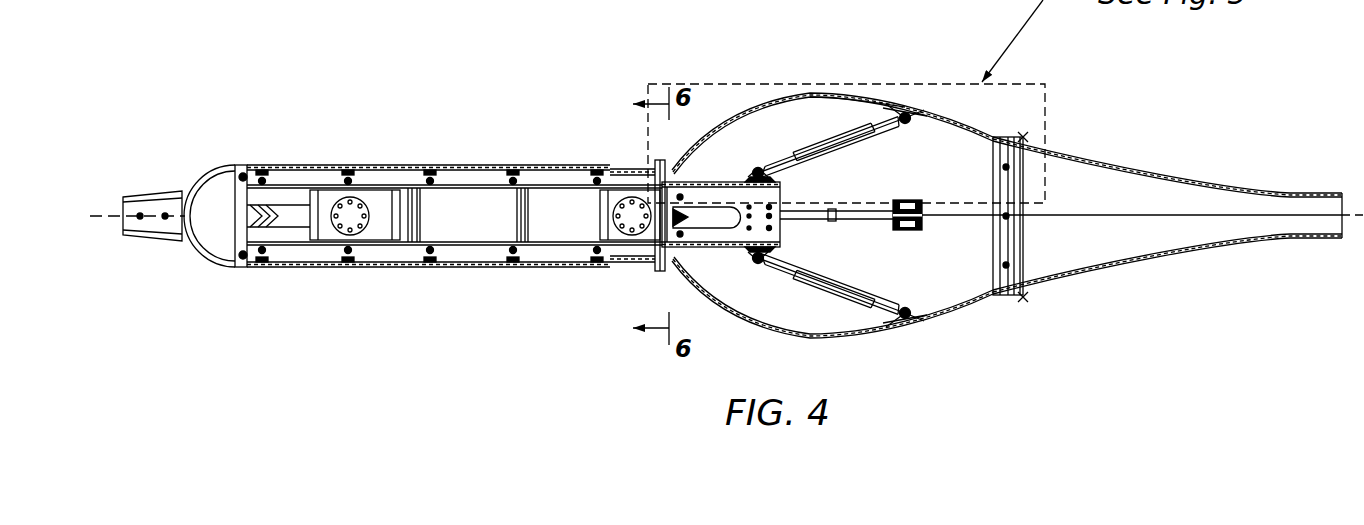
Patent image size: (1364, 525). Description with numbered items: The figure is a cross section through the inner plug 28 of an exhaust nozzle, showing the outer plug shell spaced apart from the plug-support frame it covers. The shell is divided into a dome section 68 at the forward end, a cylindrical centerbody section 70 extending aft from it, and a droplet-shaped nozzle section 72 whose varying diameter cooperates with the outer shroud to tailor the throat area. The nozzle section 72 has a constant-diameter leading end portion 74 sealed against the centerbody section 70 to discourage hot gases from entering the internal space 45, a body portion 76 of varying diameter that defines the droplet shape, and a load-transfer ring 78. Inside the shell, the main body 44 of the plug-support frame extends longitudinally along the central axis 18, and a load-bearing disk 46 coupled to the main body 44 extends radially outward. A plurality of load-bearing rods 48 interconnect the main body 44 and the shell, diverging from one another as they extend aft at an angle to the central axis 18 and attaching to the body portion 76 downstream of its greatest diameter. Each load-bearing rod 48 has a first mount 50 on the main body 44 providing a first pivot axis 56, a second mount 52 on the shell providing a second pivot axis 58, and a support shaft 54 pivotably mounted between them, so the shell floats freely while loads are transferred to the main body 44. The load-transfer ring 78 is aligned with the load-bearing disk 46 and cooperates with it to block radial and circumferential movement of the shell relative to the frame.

The central axis 18 is at (1363, 196).
The inner plug 28 is at (1071, 125).
The main body 44 is at (710, 176).
The internal space 45 is at (803, 297).
The load-bearing disk 46 is at (689, 263).
The load-bearing rods 48 is at (848, 129).
The first mount 50 is at (768, 152).
The second mount 52 is at (916, 99).
The support shaft 54 is at (828, 114).
The first pivot axis 56 is at (760, 170).
The second pivot axis 58 is at (914, 124).
The dome section 68 is at (196, 166).
The centerbody section 70 is at (474, 152).
The nozzle section 72 is at (1151, 164).
The leading end portion 74 is at (637, 167).
The body portion 76 is at (986, 130).
The load-transfer ring 78 is at (662, 156).